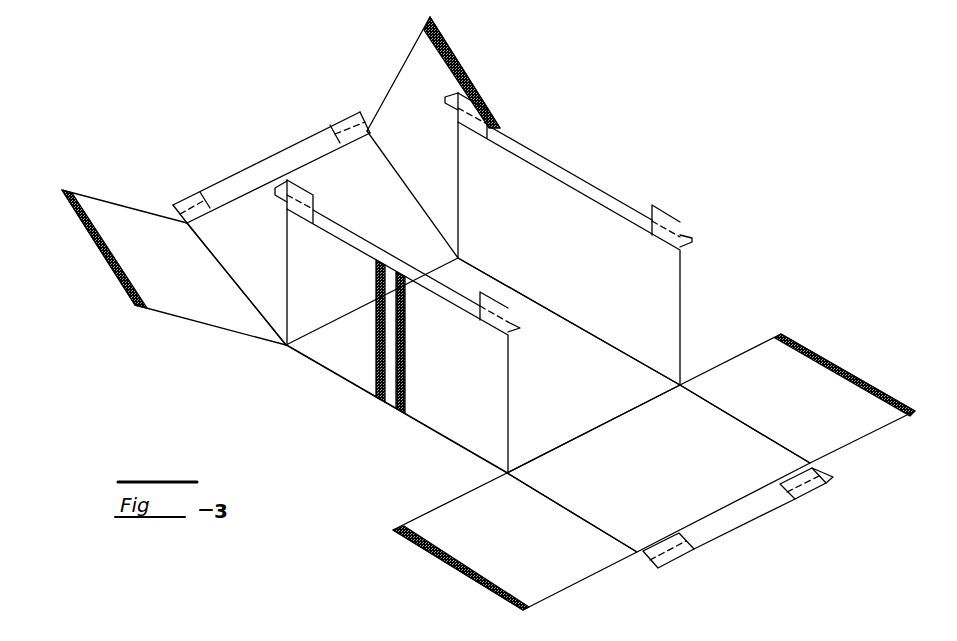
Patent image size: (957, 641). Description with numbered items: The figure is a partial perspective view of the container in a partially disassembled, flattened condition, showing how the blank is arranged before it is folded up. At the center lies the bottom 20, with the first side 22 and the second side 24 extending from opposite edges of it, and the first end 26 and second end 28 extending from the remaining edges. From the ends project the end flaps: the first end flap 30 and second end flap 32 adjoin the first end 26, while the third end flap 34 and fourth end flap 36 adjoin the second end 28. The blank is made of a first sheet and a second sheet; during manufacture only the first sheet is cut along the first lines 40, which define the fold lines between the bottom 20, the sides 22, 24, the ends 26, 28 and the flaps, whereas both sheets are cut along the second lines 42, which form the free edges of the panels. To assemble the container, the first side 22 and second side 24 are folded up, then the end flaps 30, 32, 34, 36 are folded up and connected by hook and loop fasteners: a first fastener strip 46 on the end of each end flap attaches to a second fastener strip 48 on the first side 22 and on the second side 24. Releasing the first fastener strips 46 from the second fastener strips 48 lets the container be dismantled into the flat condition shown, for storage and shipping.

The bottom 20 is at (544, 357).
The first side 22 is at (444, 382).
The second side 24 is at (550, 259).
The first end 26 is at (649, 474).
The second end 28 is at (341, 194).
The first end flap 30 is at (501, 545).
The second end flap 32 is at (783, 410).
The third end flap 34 is at (164, 276).
The fourth end flap 36 is at (409, 141).
The first lines 40 is at (222, 264).
The second lines 42 is at (205, 325).
The first fastener strip 46 is at (99, 248).
The second fastener strip 48 is at (376, 368).